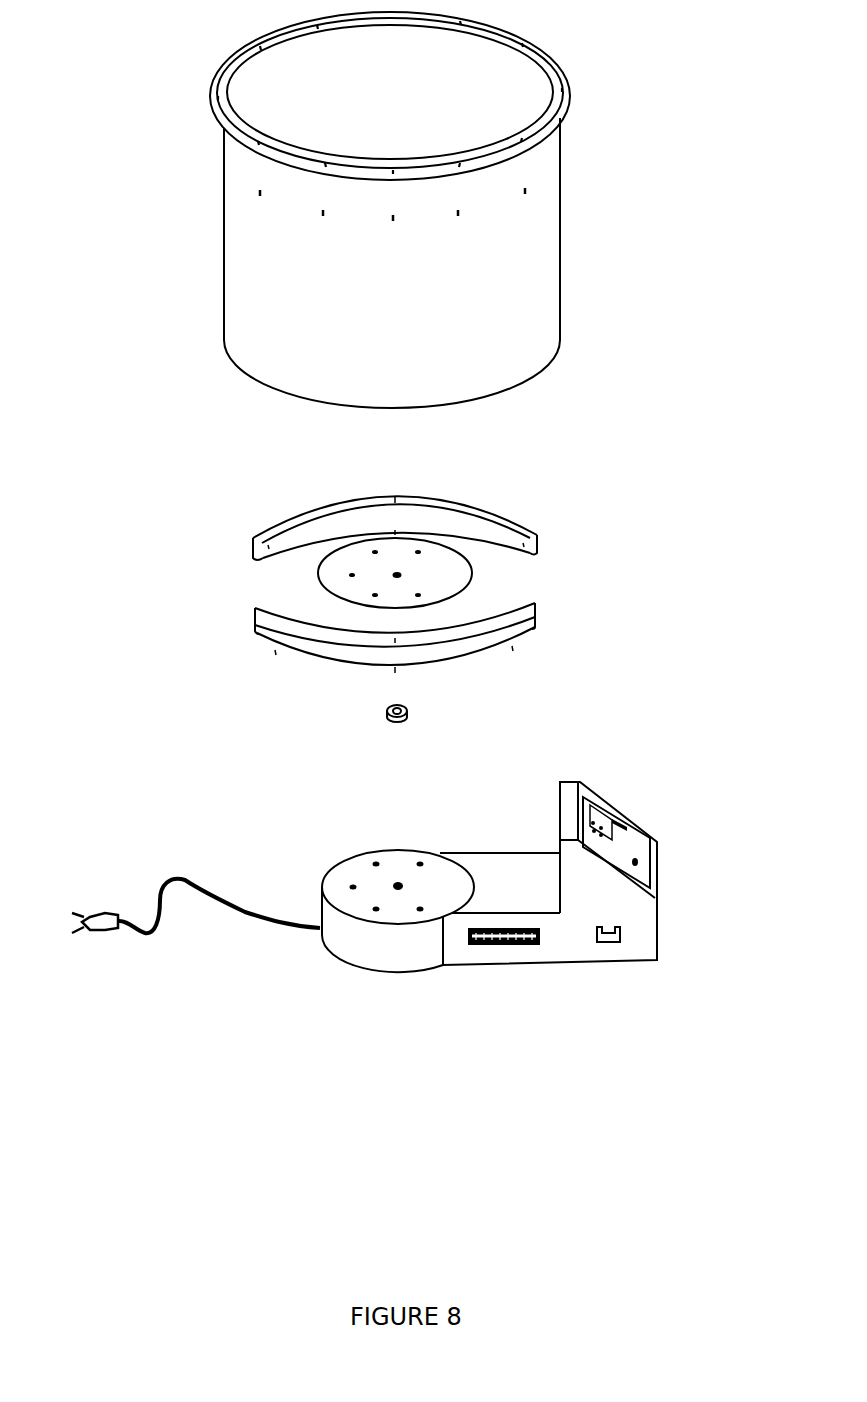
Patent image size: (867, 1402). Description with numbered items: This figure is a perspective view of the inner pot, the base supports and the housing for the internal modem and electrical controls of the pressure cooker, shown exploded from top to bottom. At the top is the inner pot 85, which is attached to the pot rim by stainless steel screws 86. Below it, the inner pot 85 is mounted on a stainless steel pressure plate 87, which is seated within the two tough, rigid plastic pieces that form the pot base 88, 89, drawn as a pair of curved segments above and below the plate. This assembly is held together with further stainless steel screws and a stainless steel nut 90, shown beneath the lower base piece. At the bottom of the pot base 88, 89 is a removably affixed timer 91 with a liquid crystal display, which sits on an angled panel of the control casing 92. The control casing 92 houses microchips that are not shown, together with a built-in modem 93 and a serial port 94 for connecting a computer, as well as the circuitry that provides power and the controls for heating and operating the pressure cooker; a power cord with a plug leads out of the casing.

The inner pot 85 is at (551, 60).
The stainless steel screws 86 is at (527, 197).
The stainless steel pressure plate 87 is at (473, 577).
The pot base 88 is at (503, 517).
The pot base 89 is at (537, 617).
The stainless steel nut 90 is at (410, 715).
The timer 91 is at (593, 812).
The control casing 92 is at (655, 932).
The built-in modem 93 is at (607, 944).
The serial port 94 is at (500, 946).